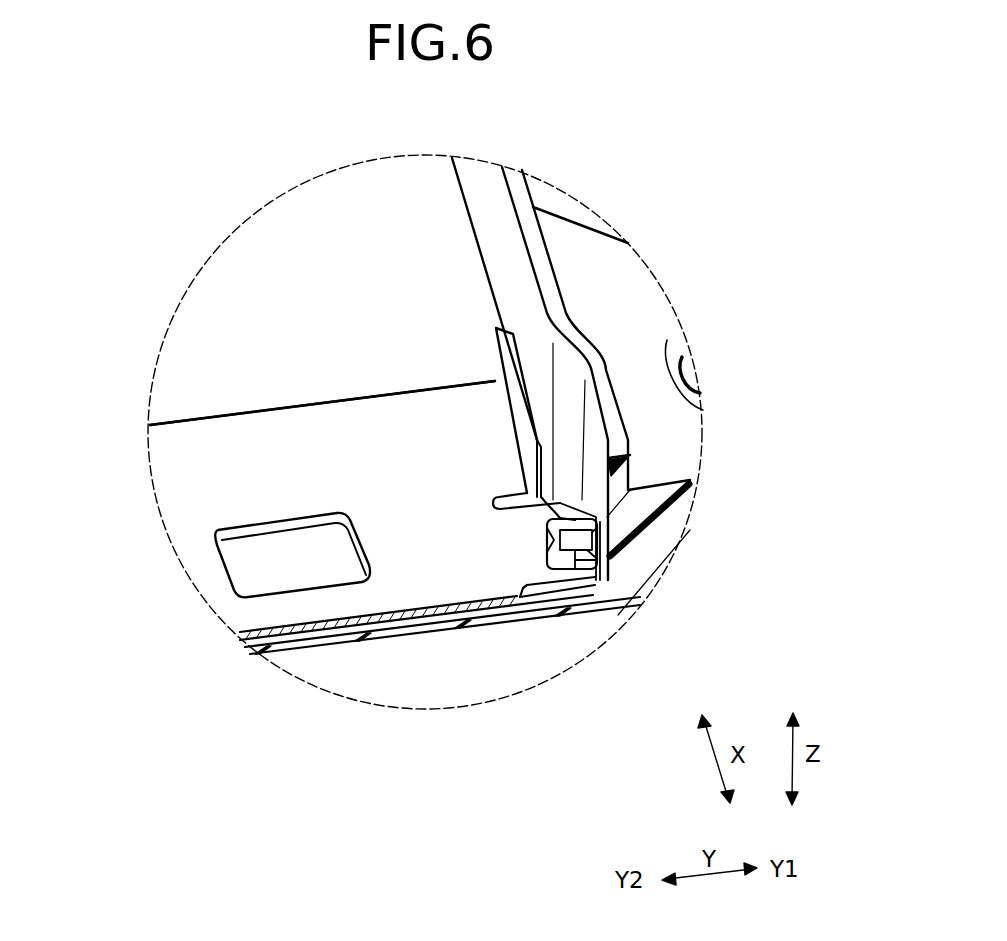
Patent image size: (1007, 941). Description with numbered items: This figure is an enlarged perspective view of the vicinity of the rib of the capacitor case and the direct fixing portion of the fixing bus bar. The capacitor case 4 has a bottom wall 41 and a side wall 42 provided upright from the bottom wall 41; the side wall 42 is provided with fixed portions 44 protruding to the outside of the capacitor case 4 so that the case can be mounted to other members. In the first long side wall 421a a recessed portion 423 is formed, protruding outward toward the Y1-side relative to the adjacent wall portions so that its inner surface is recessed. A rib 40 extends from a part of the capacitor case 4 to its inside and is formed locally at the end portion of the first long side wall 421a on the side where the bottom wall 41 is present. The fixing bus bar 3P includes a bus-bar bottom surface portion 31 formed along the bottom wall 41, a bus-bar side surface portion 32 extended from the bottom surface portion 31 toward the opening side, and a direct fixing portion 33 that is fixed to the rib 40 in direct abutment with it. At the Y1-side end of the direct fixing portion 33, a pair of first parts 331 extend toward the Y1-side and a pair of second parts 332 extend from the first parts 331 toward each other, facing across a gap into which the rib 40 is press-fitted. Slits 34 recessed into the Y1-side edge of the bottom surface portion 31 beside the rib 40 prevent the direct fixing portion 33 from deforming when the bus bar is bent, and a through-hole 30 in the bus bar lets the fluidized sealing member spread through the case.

The capacitor case 4 is at (520, 177).
The side wall 42 is at (488, 218).
The first long side wall 421a is at (543, 250).
The recessed portion 423 is at (618, 370).
The fixed portion 44 is at (640, 450).
The bus-bar side surface portion 32 is at (493, 370).
The fixing bus bar 3P is at (247, 413).
The bus-bar bottom surface portion 31 is at (230, 467).
The through-hole 30 is at (293, 523).
The bottom wall 41 is at (248, 327).
The slit 34 is at (513, 503).
The direct fixing portion 33 is at (537, 573).
The first part 331 is at (547, 497).
The second part 332 is at (592, 514).
The rib 40 is at (598, 573).